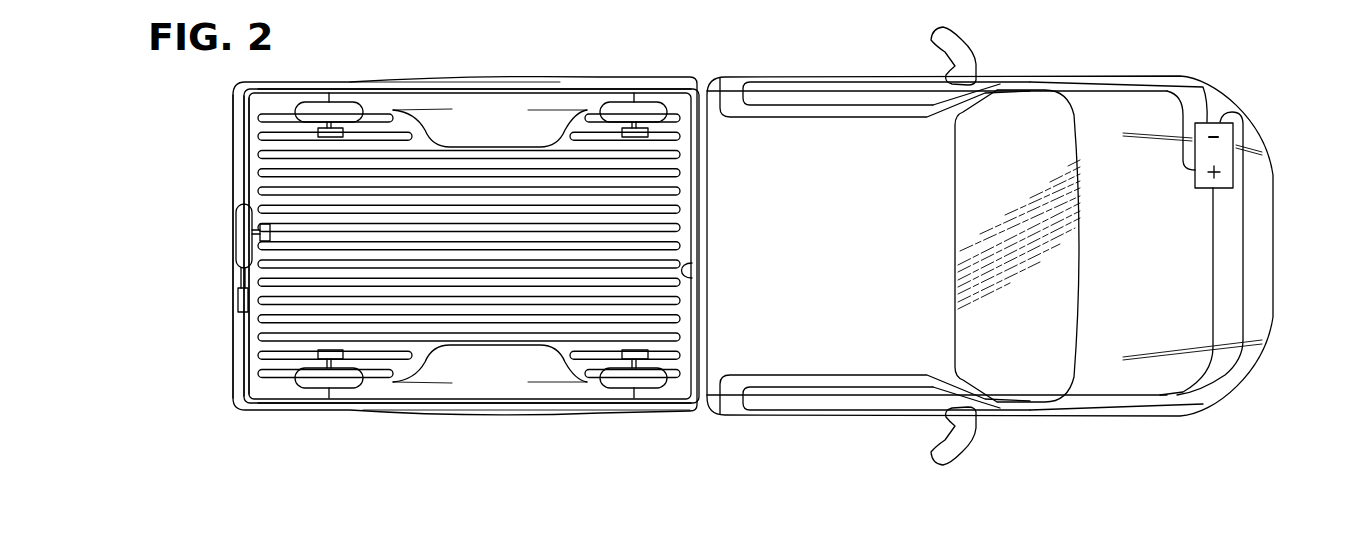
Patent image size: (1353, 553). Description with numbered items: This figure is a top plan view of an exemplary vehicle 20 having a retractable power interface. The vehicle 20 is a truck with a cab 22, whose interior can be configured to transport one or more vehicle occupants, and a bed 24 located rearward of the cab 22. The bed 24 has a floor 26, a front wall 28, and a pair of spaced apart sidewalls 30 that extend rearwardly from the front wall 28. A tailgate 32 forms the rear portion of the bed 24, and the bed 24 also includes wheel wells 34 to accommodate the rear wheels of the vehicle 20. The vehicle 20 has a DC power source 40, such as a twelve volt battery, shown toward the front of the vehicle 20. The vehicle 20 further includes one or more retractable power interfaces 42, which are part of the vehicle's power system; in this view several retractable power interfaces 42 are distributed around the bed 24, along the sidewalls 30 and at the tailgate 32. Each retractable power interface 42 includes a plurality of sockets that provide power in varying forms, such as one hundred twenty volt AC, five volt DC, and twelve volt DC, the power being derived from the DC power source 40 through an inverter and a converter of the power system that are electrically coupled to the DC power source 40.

The vehicle 20 is at (1184, 58).
The cab 22 is at (908, 424).
The bed 24 is at (540, 72).
The floor 26 is at (643, 250).
The front wall 28 is at (692, 265).
The sidewalls 30 is at (473, 88).
The tailgate 32 is at (234, 160).
The wheel wells 34 is at (485, 125).
The DC power source 40 is at (1228, 162).
The retractable power interface 42 is at (329, 133).